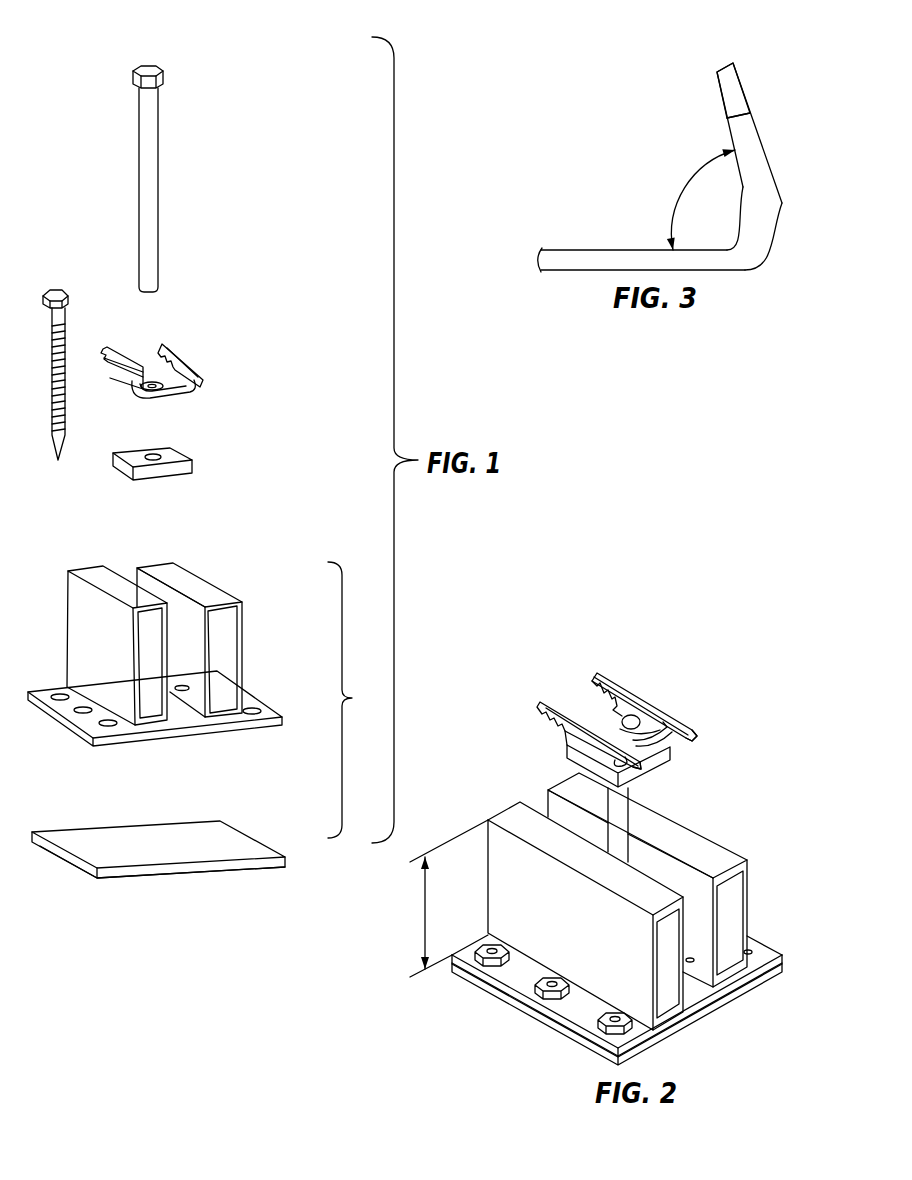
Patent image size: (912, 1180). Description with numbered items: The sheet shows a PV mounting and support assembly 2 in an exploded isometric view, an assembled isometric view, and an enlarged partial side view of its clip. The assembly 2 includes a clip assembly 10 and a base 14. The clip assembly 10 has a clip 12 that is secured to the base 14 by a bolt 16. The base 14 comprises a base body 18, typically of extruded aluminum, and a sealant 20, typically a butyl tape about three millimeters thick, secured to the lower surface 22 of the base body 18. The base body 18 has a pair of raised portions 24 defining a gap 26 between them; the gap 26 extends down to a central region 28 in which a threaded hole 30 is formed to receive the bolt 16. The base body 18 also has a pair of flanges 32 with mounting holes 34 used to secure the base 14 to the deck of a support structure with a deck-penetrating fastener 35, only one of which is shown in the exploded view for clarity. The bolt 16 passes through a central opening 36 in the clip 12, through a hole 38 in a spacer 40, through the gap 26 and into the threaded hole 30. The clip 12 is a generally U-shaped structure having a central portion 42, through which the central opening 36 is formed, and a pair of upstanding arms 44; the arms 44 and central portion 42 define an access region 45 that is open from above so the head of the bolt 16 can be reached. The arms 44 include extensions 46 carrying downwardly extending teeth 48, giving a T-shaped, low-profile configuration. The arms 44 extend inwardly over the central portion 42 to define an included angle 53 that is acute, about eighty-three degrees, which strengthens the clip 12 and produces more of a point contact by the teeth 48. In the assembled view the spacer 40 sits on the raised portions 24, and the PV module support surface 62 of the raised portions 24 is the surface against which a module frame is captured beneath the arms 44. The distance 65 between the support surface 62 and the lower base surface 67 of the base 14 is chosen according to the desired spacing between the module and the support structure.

In FIG. 1, the PV mounting and support assembly 2 is at (74, 30).
In FIG. 2, the PV mounting and support assembly 2 is at (766, 640).
In FIG. 1, the clip assembly 10 is at (236, 95).
In FIG. 1, the clip 12 is at (172, 348).
In FIG. 3, the clip 12 is at (687, 159).
In FIG. 2, the clip 12 is at (622, 716).
In FIG. 1, the base 14 is at (352, 698).
In FIG. 2, the base 14 is at (782, 918).
In FIG. 1, the bolt 16 is at (150, 172).
In FIG. 2, the bolt 16 is at (622, 820).
In FIG. 1, the base body 18 is at (78, 546).
In FIG. 2, the base body 18 is at (641, 901).
In FIG. 1, the sealant 20 is at (110, 828).
In FIG. 2, the sealant 20 is at (747, 992).
In FIG. 1, the lower surface 22 is at (147, 742).
In FIG. 1, the raised portions 24 is at (83, 627).
In FIG. 1, the gap 26 is at (128, 575).
In FIG. 1, the central region 28 is at (188, 712).
In FIG. 1, the threaded hole 30 is at (184, 685).
In FIG. 1, the flanges 32 is at (100, 741).
In FIG. 1, the mounting holes 34 is at (60, 690).
In FIG. 1, the deck-penetrating fastener 35 is at (62, 290).
In FIG. 2, the deck-penetrating fastener 35 is at (612, 1033).
In FIG. 1, the central opening 36 is at (152, 380).
In FIG. 1, the hole 38 is at (155, 455).
In FIG. 1, the spacer 40 is at (181, 446).
In FIG. 2, the spacer 40 is at (567, 756).
In FIG. 3, the central portion 42 is at (598, 249).
In FIG. 2, the central portion 42 is at (643, 747).
In FIG. 2, the upstanding arms 44 is at (638, 687).
In FIG. 1, the access region 45 is at (143, 350).
In FIG. 2, the access region 45 is at (597, 703).
In FIG. 3, the extensions 46 is at (731, 84).
In FIG. 2, the extensions 46 is at (610, 668).
In FIG. 3, the teeth 48 is at (749, 118).
In FIG. 2, the teeth 48 is at (550, 723).
In FIG. 3, the included angle 53 is at (700, 186).
In FIG. 2, the PV module support surface 62 is at (518, 823).
In FIG. 2, the distance 65 is at (425, 900).
In FIG. 1, the lower base surface 67 is at (118, 878).
In FIG. 2, the lower base surface 67 is at (677, 1033).